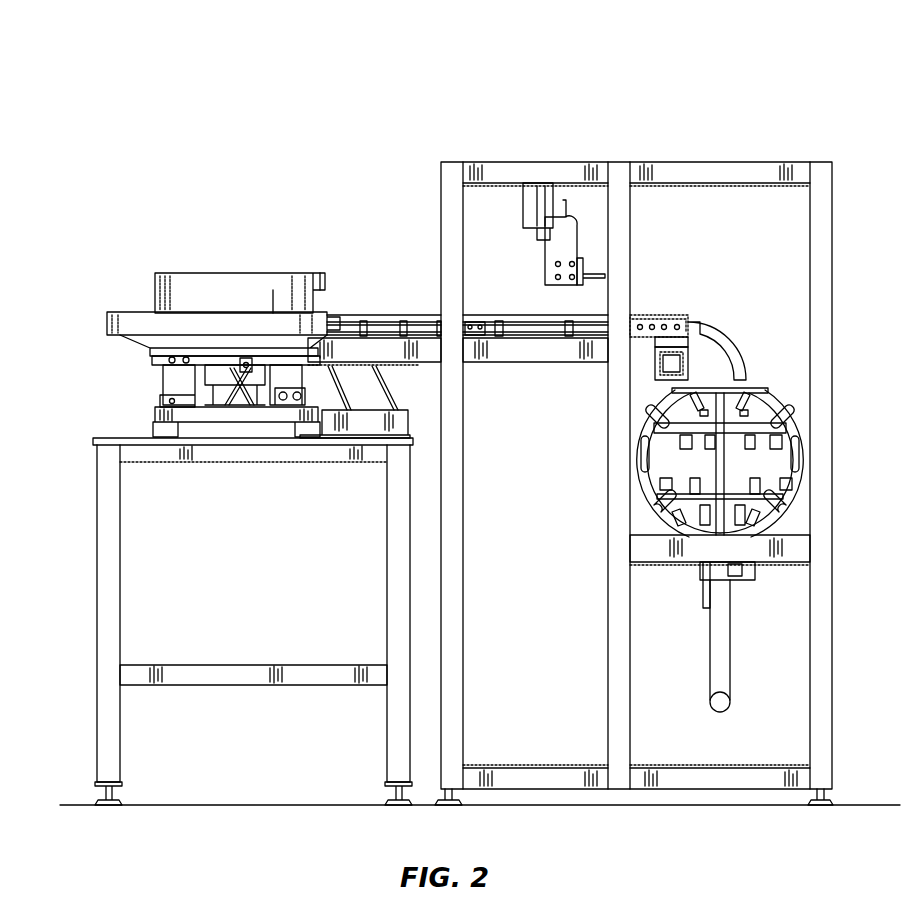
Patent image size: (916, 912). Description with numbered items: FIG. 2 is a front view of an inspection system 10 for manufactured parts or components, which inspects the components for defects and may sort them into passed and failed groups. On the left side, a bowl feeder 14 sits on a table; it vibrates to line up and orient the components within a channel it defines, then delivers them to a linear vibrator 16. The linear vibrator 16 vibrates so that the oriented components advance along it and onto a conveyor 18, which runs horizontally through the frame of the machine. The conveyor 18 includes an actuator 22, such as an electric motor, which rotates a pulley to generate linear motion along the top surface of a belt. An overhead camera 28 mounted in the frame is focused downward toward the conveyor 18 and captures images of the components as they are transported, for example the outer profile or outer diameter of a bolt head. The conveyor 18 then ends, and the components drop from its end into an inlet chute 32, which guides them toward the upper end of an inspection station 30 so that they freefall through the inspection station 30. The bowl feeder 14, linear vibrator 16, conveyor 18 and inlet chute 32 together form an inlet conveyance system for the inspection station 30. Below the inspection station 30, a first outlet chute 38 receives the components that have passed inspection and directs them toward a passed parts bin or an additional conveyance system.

The inspection system 10 is at (205, 80).
The bowl feeder 14 is at (155, 293).
The linear vibrator 16 is at (390, 330).
The conveyor 18 is at (503, 320).
The actuator 22 is at (672, 363).
The overhead camera 28 is at (562, 252).
The inspection station 30 is at (785, 380).
The inlet chute 32 is at (718, 348).
The first outlet chute 38 is at (730, 658).